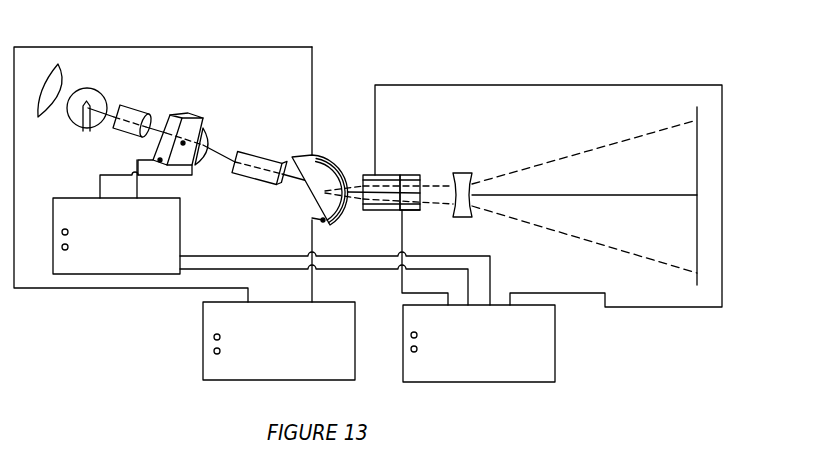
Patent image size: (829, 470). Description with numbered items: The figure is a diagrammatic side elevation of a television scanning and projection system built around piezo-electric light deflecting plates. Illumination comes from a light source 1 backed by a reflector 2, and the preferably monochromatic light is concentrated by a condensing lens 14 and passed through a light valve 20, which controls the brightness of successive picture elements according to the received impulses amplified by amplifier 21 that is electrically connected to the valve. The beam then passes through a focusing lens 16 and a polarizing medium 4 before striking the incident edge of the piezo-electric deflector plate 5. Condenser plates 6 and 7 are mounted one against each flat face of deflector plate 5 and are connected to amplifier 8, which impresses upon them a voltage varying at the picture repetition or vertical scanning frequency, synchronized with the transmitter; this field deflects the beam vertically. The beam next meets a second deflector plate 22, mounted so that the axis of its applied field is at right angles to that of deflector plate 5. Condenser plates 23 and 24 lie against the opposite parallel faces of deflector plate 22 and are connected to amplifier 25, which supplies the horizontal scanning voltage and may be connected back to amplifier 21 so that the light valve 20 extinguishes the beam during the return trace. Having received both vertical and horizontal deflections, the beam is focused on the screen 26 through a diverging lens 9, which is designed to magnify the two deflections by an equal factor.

The light source 1 is at (105, 92).
The reflector 2 is at (36, 93).
The polarizing medium 4 is at (253, 155).
The piezo-electric deflector plate 5 is at (347, 208).
The condenser plate 6 is at (350, 172).
The condenser plate 7 is at (329, 207).
The amplifier 8 is at (279, 341).
The diverging lens 9 is at (479, 151).
The condensing lens 14 is at (150, 94).
The focusing lens 16 is at (215, 148).
The light valve 20 is at (208, 94).
The amplifier 21 is at (116, 236).
The deflector plate 22 is at (421, 187).
The condenser plate 23 is at (385, 173).
The condenser plate 24 is at (406, 212).
The amplifier 25 is at (479, 343).
The screen 26 is at (696, 192).